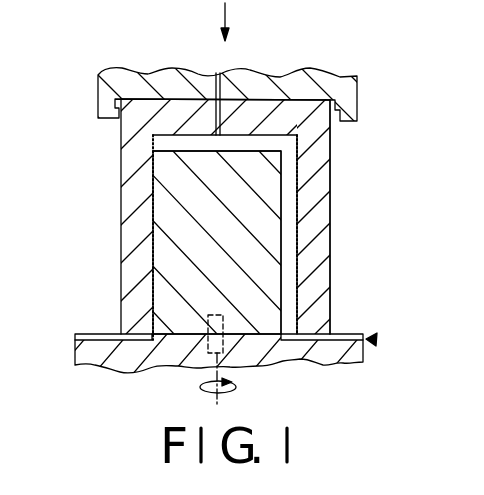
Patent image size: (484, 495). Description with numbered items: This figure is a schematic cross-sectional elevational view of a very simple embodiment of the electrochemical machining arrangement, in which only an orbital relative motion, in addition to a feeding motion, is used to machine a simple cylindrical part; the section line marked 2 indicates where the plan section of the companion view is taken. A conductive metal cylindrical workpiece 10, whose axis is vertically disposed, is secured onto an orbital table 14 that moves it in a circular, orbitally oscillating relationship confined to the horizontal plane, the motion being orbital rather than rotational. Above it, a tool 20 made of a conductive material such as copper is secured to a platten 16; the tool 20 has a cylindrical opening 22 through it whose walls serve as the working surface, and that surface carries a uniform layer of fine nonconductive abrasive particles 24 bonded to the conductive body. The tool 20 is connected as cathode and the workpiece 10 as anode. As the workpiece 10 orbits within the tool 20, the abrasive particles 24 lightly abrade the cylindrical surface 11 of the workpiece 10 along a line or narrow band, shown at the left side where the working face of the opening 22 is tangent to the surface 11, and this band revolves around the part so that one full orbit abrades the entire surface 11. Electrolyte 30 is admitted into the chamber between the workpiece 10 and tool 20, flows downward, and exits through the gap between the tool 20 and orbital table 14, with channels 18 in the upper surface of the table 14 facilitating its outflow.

The cylindrical workpiece 10 is at (177, 190).
The cylindrical surface 11 is at (284, 298).
The orbital table 14 is at (309, 353).
The platten 16 is at (158, 82).
The channels 18 is at (101, 337).
The tool 20 is at (320, 162).
The cylindrical opening 22 is at (247, 130).
The nonconductive abrasive particles 24 is at (203, 83).
The electrolyte 30 is at (222, 67).
The section line 2- 2 is at (382, 227).